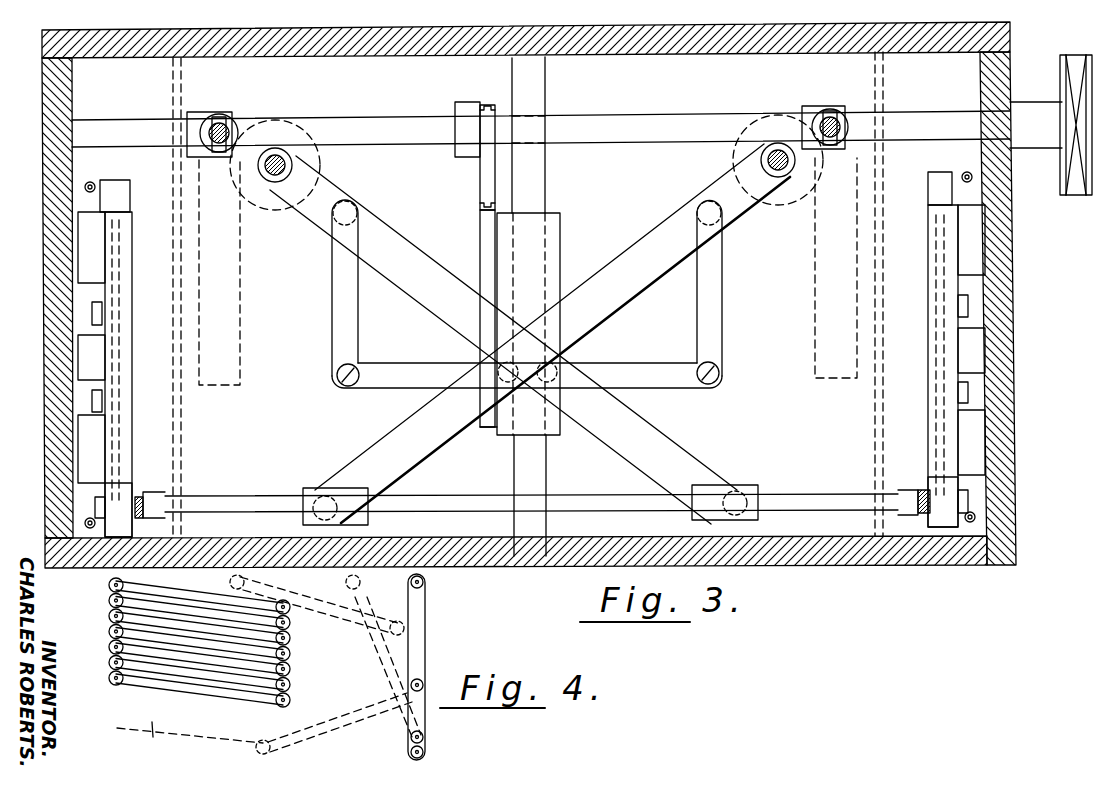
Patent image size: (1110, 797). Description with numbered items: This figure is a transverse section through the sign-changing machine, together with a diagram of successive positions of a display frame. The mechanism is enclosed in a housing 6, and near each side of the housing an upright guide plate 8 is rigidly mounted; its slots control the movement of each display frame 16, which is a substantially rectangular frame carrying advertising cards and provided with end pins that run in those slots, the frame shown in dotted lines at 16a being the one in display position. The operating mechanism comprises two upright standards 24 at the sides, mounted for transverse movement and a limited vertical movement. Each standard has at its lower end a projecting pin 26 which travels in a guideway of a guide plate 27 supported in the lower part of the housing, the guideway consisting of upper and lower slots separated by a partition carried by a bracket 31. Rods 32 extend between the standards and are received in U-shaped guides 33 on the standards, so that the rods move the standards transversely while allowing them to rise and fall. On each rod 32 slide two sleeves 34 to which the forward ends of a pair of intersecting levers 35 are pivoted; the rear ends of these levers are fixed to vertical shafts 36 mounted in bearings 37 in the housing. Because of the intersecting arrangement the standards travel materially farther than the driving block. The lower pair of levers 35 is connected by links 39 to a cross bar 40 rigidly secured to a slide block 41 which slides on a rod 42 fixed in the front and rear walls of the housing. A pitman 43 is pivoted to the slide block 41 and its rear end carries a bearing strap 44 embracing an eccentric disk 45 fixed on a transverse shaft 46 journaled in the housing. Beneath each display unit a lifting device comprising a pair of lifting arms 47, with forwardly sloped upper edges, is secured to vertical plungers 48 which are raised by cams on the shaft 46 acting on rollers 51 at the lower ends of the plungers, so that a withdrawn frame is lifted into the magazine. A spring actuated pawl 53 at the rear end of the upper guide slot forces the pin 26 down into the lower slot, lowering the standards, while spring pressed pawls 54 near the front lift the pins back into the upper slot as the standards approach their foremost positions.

In FIG. 3, the housing 6 is at (55, 345).
In FIG. 3, the guide plate 8 is at (183, 425).
In FIG. 4, the display frame 16 is at (225, 663).
In FIG. 4, the display frame in display position 16a is at (420, 656).
In FIG. 3, the upright standard 24 is at (140, 496).
In FIG. 3, the pin 26 is at (94, 507).
In FIG. 3, the guide plate 27 is at (114, 320).
In FIG. 3, the bracket 31 is at (90, 358).
In FIG. 3, the rod 32 is at (440, 502).
In FIG. 3, the U-shaped guide 33 is at (165, 497).
In FIG. 3, the sleeve 34 is at (315, 488).
In FIG. 3, the intersecting lever 35 is at (530, 334).
In FIG. 3, the vertical shaft 36 is at (280, 180).
In FIG. 3, the bearing 37 is at (318, 165).
In FIG. 3, the link 39 is at (348, 317).
In FIG. 3, the cross bar 40 is at (632, 378).
In FIG. 3, the slide block 41 is at (553, 426).
In FIG. 3, the rod 42 is at (535, 474).
In FIG. 3, the pitman 43 is at (485, 236).
In FIG. 3, the bearing strap 44 is at (486, 172).
In FIG. 3, the eccentric disk 45 is at (483, 105).
In FIG. 3, the transverse shaft 46 is at (395, 128).
In FIG. 3, the lifting arm 47 is at (243, 382).
In FIG. 3, the vertical plunger 48 is at (220, 160).
In FIG. 3, the roller 51 is at (220, 115).
In FIG. 3, the pawl 53 is at (98, 297).
In FIG. 3, the pawl 54 is at (100, 413).